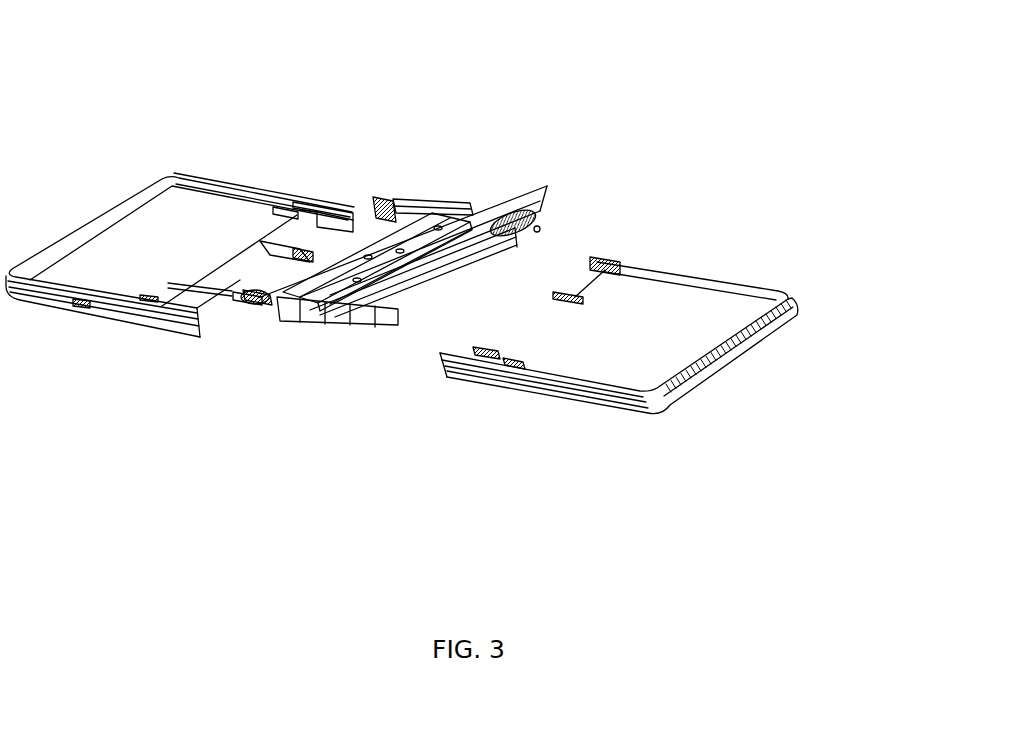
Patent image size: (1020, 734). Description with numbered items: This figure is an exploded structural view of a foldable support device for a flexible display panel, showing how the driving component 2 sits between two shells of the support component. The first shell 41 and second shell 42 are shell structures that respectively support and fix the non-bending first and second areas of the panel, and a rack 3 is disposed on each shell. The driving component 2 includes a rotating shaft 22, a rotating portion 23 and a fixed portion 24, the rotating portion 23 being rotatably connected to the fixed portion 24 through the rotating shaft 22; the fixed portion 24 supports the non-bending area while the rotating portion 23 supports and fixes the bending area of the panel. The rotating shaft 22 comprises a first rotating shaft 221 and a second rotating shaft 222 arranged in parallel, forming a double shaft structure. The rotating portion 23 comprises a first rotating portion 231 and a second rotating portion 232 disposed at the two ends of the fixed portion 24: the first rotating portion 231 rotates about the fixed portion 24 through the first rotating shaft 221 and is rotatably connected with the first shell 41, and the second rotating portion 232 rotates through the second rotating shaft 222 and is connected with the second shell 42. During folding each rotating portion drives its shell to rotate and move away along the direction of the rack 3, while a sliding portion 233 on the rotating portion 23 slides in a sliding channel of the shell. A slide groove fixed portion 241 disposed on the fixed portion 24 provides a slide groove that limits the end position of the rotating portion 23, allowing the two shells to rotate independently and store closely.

The driving component 2 is at (465, 205).
The rack 3 is at (507, 357).
The rotating shaft 22 is at (415, 217).
The rotating portion 23 is at (445, 252).
The fixed portion 24 is at (428, 217).
The first shell 41 is at (157, 225).
The second shell 42 is at (662, 340).
The first rotating shaft 221 is at (335, 290).
The second rotating shaft 222 is at (381, 268).
The first rotating portion 231 is at (310, 297).
The second rotating portion 232 is at (415, 267).
The sliding portion 233 is at (380, 197).
The slide groove fixed portion 241 is at (263, 300).